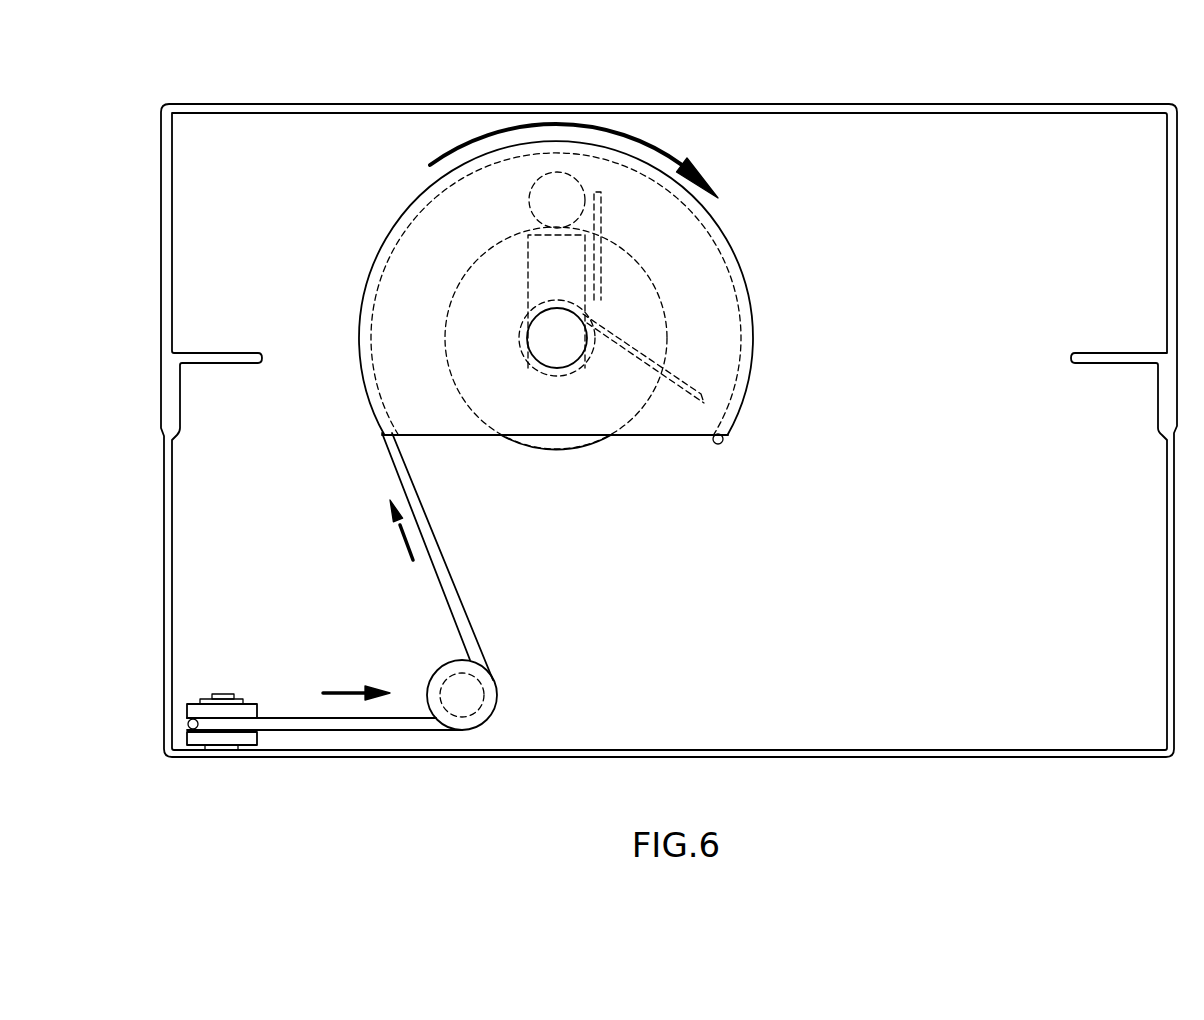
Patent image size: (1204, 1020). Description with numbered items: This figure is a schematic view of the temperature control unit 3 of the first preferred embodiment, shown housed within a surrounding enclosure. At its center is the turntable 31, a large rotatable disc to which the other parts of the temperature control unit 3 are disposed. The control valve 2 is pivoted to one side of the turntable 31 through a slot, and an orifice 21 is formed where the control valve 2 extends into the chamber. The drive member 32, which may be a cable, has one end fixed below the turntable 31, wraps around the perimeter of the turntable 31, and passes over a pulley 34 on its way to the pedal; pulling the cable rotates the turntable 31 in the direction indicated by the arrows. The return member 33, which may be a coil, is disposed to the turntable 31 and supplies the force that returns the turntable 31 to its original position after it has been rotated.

The control valve 2 is at (532, 283).
The orifice 21 is at (528, 202).
The temperature control unit 3 is at (720, 198).
The turntable 31 is at (727, 353).
The drive member 32 is at (450, 577).
The return member 33 is at (664, 376).
The pulley 34 is at (470, 700).